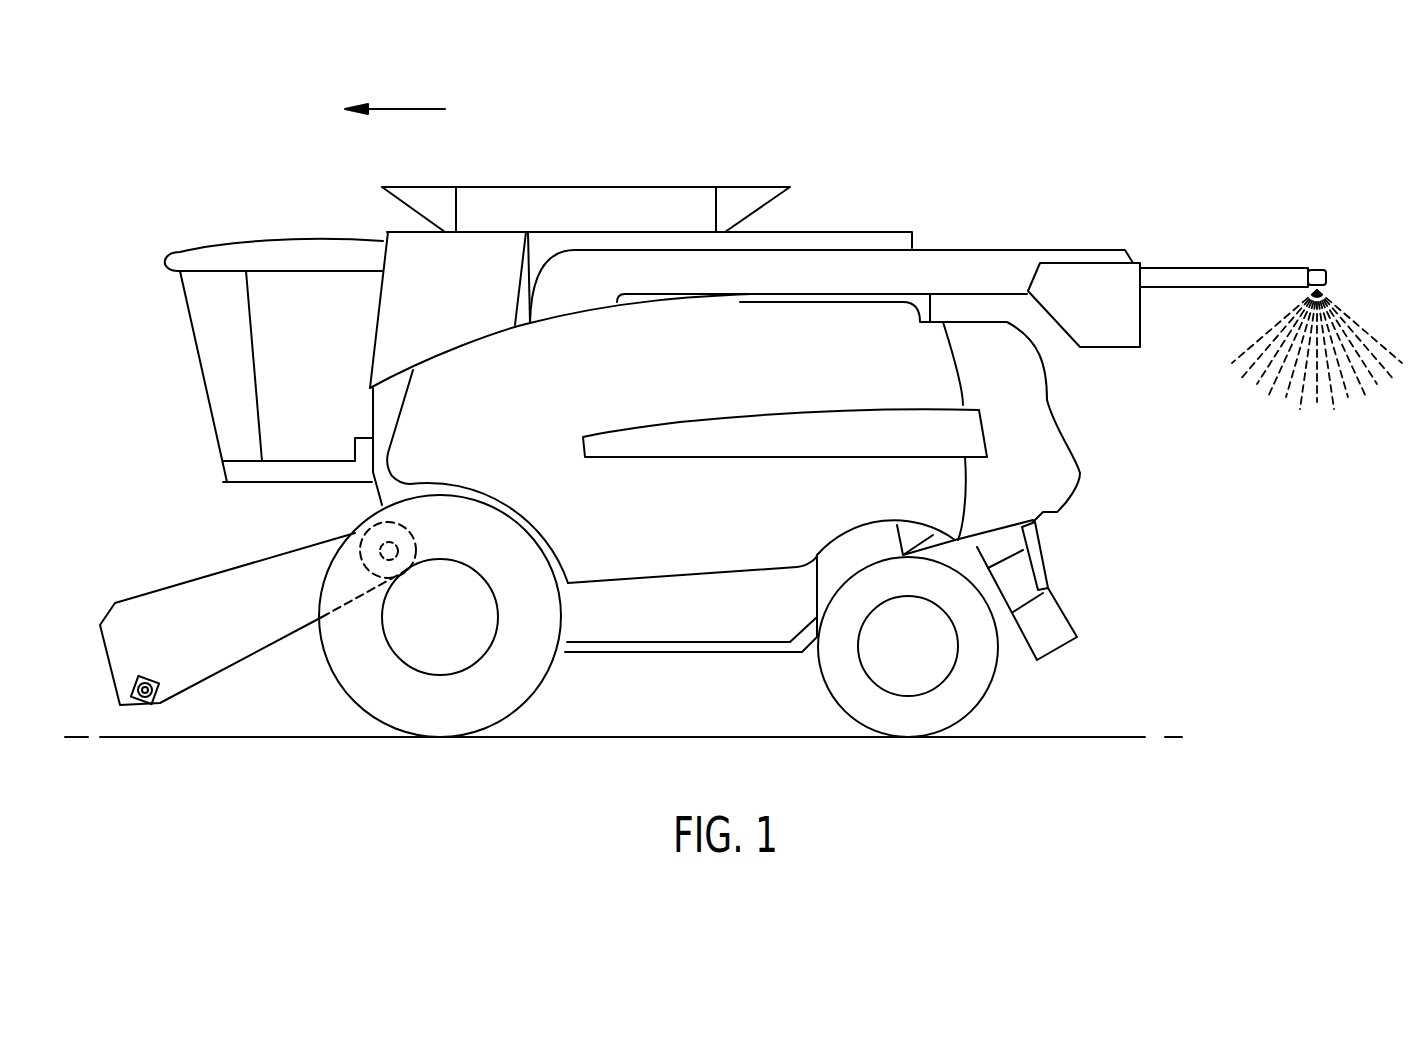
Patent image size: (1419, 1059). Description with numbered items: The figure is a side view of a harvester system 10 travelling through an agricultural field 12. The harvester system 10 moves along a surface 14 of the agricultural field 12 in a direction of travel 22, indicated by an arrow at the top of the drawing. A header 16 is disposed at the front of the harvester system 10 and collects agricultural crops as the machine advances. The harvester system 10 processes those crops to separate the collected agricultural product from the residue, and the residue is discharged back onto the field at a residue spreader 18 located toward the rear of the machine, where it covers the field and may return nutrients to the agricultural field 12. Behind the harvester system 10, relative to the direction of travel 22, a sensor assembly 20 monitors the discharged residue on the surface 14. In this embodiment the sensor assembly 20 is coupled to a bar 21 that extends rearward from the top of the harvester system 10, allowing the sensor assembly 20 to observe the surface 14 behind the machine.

The harvester system 10 is at (1068, 185).
The agricultural field 12 is at (1153, 678).
The surface 14 is at (1080, 737).
The header 16 is at (170, 605).
The residue spreader 18 is at (1067, 612).
The sensor assembly 20 is at (1317, 271).
The bar 21 is at (1215, 275).
The direction of travel 22 is at (403, 109).